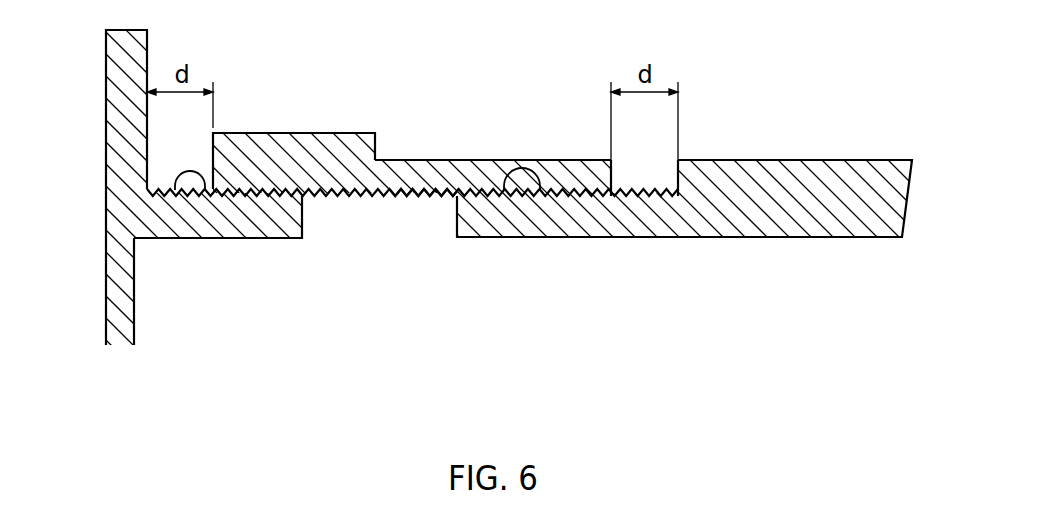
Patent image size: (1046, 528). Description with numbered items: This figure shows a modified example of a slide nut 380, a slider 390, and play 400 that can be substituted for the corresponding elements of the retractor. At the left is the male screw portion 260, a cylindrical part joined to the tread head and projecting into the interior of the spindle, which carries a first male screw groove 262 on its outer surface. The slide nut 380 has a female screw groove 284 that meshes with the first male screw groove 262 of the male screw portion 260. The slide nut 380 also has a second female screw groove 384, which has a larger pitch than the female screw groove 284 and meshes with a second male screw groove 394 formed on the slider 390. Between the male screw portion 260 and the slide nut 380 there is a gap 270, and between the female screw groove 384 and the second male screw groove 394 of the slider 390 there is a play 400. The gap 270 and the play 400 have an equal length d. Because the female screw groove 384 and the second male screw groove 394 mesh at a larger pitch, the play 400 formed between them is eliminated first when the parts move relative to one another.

The male screw portion 260 is at (167, 233).
The first male screw groove 262 is at (208, 195).
The gap 270 is at (173, 153).
The female screw groove 284 is at (331, 198).
The slide nut 380 is at (316, 143).
The female screw groove 384 is at (428, 203).
The slider 390 is at (822, 193).
The second male screw groove 394 is at (538, 190).
The play 400 is at (660, 175).